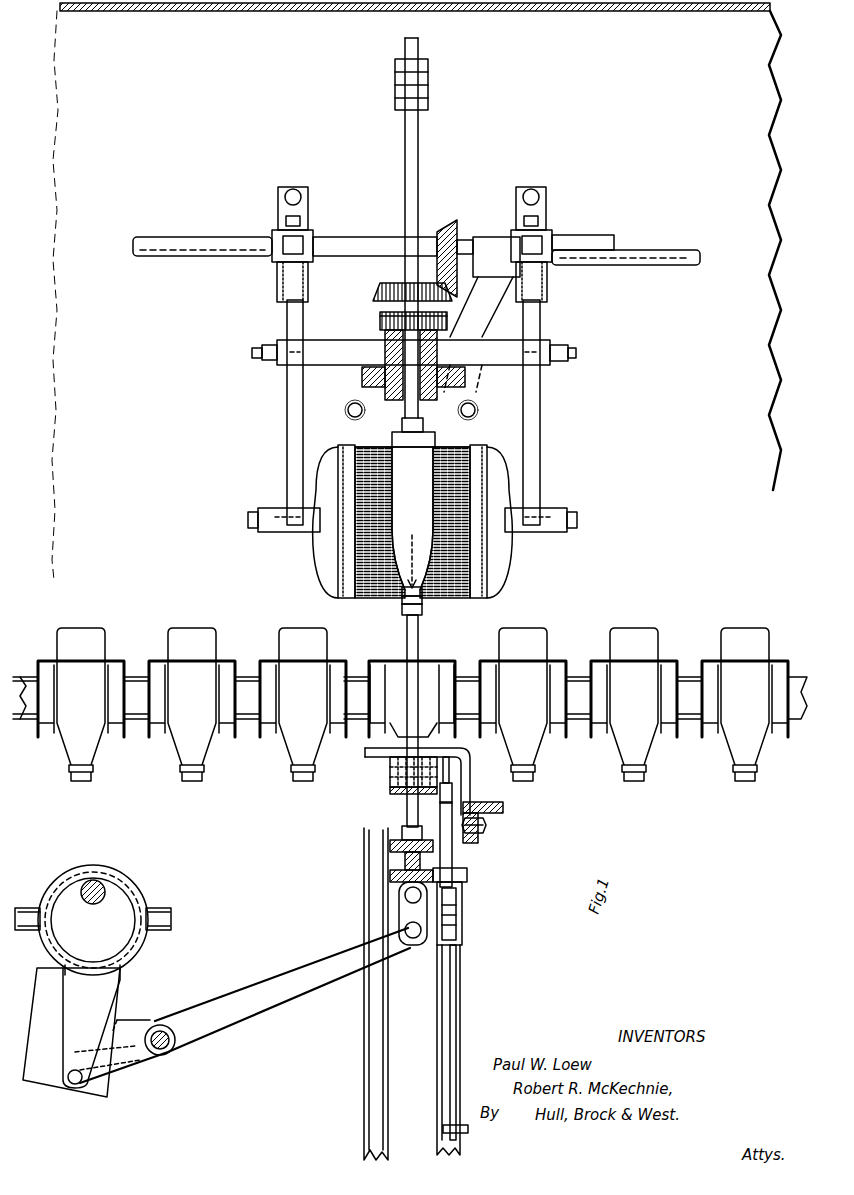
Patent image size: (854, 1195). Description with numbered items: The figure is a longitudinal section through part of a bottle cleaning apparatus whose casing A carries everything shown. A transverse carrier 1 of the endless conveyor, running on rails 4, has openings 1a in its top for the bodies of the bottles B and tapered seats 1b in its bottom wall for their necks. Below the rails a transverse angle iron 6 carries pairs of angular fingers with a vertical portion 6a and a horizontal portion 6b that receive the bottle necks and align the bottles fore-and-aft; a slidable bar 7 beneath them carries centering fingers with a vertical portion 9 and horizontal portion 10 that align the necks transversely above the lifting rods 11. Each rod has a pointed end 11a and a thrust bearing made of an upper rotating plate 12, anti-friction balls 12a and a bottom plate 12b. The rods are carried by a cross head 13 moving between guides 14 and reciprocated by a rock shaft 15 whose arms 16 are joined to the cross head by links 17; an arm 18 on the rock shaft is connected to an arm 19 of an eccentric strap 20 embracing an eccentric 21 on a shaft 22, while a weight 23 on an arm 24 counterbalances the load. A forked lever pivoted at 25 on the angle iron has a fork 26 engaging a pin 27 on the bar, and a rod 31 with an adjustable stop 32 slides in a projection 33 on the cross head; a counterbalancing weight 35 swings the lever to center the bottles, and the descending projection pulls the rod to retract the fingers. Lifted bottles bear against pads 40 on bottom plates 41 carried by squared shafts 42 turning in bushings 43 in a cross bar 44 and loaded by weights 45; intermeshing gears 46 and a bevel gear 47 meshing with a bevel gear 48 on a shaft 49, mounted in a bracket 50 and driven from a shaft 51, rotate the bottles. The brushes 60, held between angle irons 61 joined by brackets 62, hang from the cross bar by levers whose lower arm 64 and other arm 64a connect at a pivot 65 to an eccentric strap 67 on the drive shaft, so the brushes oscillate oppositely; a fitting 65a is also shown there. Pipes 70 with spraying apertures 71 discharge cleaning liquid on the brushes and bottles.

The casing A is at (668, 12).
The bottles B is at (410, 573).
The transverse carrier 1 is at (457, 664).
The openings 1a is at (396, 672).
The tapered seats 1b is at (420, 722).
The rails 4 is at (246, 680).
The angle iron 6 is at (503, 806).
The vertical portion of finger 6a is at (470, 758).
The horizontal portion of finger 6b is at (380, 756).
The bar 7 is at (390, 790).
The vertical portion of centering finger 9 is at (390, 780).
The horizontal portion of centering finger 10 is at (445, 780).
The lifting rods 11 is at (418, 640).
The pointed upper end 11a is at (414, 553).
The upper rotating plate 12 is at (422, 608).
The anti-friction balls 12a is at (402, 600).
The bottom plate 12b is at (405, 616).
The cross head 13 is at (390, 856).
The guides 14 is at (366, 1020).
The rock shaft 15 is at (172, 1052).
The arms 16 is at (296, 964).
The links 17 is at (405, 916).
The arm 18 is at (140, 1060).
The arm 19 is at (95, 1000).
The eccentric strap 20 is at (135, 955).
The eccentric 21 is at (93, 920).
The shaft 22 is at (95, 880).
The weight 23 is at (71, 1032).
The arm 24 is at (145, 1012).
The pivot 25 is at (485, 830).
The fork 26 is at (437, 797).
The pin 27 is at (455, 790).
The rod 31 is at (457, 973).
The stop 32 is at (468, 1130).
The projection 33 is at (467, 876).
The counterbalancing weight 35 is at (462, 922).
The pads 40 is at (412, 447).
The bottom plates 41 is at (435, 436).
The squared shaft 42 is at (420, 156).
The bushing 43 is at (402, 422).
The cross bar 44 is at (372, 368).
The weights 45 is at (428, 84).
The gear 46 is at (380, 322).
The bevel gear 47 is at (378, 288).
The bevel gear 48 is at (450, 225).
The shaft 49 is at (665, 252).
The bracket 50 is at (482, 314).
The shaft 51 is at (206, 240).
The brushes 60 is at (340, 478).
The angle irons 61 is at (320, 450).
The brackets 62 is at (487, 478).
The lower arm of lever 64 is at (287, 400).
The upper arm of lever 64a is at (280, 312).
The pivotal connection 65 is at (322, 340).
The cross bar bolt 65a is at (577, 352).
The eccentric strap 67 is at (303, 220).
The pipes 70 is at (348, 406).
The spraying apertures 71 is at (350, 420).